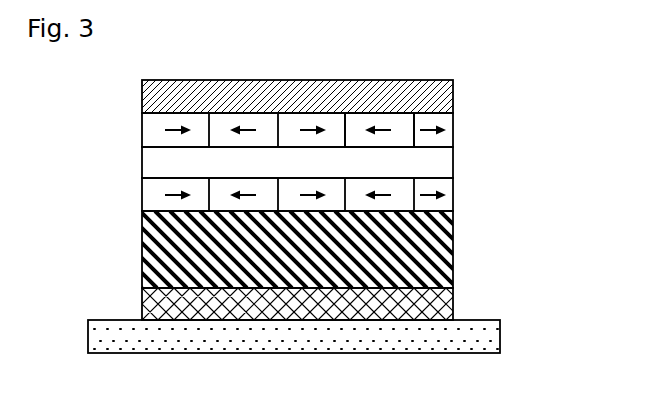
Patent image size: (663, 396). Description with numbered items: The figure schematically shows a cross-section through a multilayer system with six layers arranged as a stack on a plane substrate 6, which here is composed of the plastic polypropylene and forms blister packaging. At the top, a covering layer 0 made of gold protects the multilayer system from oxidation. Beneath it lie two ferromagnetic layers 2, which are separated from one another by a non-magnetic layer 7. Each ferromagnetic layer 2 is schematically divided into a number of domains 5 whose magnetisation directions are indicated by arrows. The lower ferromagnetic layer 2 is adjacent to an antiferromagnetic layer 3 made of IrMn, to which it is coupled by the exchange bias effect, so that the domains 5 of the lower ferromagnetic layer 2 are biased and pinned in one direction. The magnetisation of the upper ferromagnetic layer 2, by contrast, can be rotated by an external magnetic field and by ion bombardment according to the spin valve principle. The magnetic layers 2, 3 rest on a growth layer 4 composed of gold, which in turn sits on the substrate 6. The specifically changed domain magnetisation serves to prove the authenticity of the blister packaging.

The covering layer 0 is at (453, 98).
The ferromagnetic layer 2 is at (453, 131).
The antiferromagnetic layer 3 is at (453, 243).
The growth layer 4 is at (453, 300).
The domains 5 is at (406, 133).
The substrate 6 is at (500, 338).
The non-magnetic layer 7 is at (453, 168).